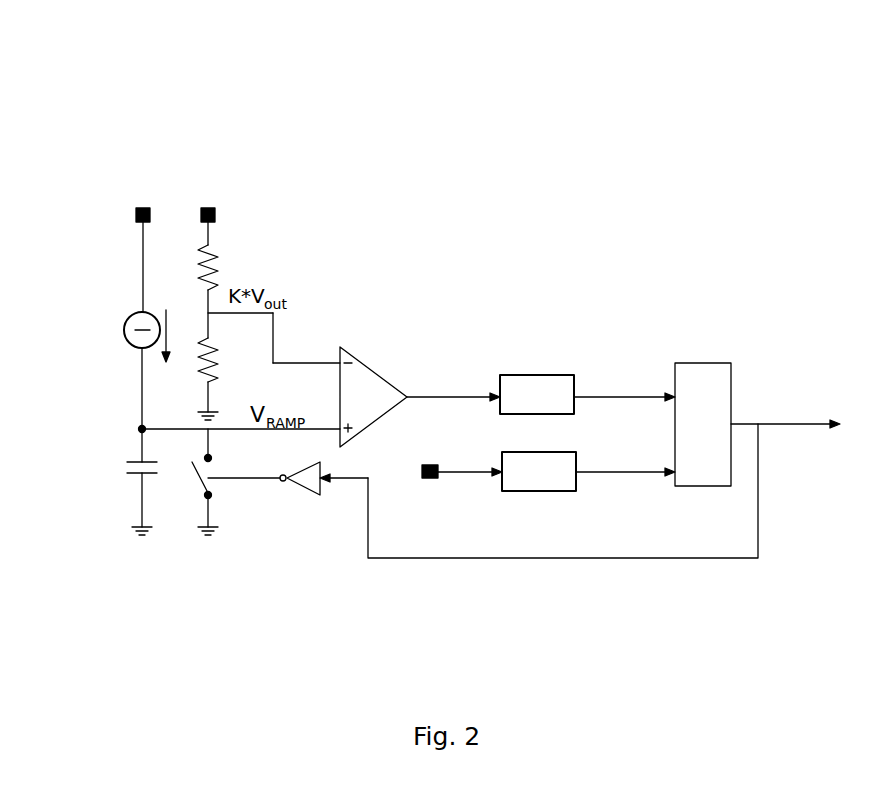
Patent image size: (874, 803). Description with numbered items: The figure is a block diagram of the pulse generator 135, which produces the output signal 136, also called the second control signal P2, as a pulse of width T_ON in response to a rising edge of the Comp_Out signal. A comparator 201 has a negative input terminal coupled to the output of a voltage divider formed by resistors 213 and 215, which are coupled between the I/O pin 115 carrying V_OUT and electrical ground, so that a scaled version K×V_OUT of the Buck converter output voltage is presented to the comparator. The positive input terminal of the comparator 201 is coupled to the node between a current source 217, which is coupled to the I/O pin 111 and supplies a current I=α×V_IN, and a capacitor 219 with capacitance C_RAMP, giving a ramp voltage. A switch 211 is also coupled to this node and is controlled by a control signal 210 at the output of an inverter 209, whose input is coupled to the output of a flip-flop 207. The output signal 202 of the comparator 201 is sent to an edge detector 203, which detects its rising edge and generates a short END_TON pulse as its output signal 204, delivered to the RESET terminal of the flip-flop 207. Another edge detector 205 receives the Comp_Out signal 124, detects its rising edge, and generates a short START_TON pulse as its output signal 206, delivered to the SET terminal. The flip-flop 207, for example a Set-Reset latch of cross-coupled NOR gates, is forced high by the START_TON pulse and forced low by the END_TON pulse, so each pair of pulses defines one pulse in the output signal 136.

The pulse generator 135 is at (493, 77).
The I/O pin 111 is at (136, 212).
The I/O pin 115 is at (215, 213).
The resistor 213 is at (218, 265).
The resistor 215 is at (218, 362).
The current source 217 is at (128, 318).
The capacitor 219 is at (130, 462).
The switch 211 is at (190, 500).
The control signal 210 is at (262, 480).
The inverter 209 is at (303, 490).
The comparator 201 is at (375, 372).
The output signal 202 is at (437, 397).
The edge detector 203 is at (522, 375).
The output signal 204 is at (647, 392).
The edge detector 205 is at (545, 491).
The output signal 206 is at (627, 472).
The flip-flop 207 is at (712, 363).
The output signal 136 is at (773, 424).
The output signal 124 is at (432, 480).